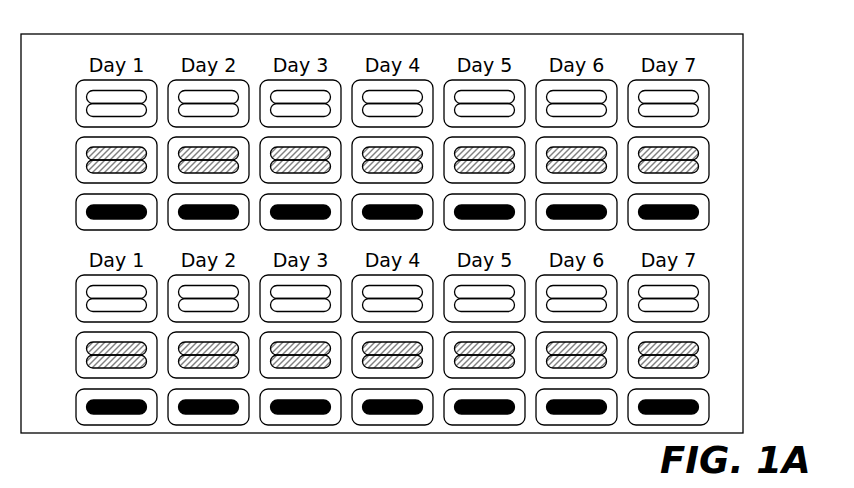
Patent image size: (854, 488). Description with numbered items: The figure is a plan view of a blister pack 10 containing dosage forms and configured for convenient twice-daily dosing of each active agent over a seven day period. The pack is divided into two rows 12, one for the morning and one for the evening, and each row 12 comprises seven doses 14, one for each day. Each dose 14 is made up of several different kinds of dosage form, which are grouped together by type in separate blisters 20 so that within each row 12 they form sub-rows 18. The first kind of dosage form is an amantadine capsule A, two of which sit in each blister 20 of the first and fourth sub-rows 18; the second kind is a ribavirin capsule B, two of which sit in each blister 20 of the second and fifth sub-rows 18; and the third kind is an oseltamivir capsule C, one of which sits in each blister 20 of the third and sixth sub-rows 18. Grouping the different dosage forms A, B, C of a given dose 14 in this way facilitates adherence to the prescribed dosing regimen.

The medication package 10 is at (438, 45).
The row 12 is at (437, 236).
The dose 14 is at (428, 236).
The sub-row 18 is at (717, 108).
The blister 20 is at (80, 85).
The amantadine capsule A is at (697, 110).
The ribavirin capsule B is at (697, 167).
The oseltamivir capsule C is at (700, 212).